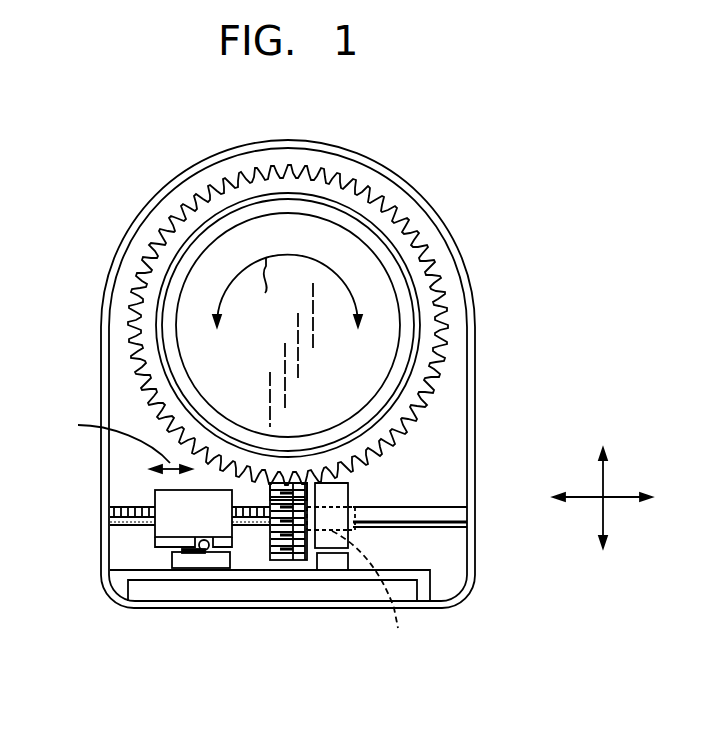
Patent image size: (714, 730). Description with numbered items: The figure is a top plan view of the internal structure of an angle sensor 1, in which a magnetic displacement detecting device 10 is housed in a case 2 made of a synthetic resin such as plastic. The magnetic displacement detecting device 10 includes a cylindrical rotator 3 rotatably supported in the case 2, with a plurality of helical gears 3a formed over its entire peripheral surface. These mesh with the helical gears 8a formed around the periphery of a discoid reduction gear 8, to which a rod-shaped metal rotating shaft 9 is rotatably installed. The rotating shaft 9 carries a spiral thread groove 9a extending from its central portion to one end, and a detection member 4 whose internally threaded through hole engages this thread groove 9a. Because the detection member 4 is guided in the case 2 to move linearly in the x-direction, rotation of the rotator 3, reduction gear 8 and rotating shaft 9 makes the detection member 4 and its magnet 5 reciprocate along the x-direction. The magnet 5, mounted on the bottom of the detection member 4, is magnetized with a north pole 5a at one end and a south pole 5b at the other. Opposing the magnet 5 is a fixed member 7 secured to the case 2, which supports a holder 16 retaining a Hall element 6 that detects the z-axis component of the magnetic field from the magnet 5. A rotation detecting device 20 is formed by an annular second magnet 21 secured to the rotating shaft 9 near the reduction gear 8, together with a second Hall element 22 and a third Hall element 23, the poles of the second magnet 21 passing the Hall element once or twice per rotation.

The angle sensor 1 is at (531, 270).
The case 2 is at (120, 229).
The rotator 3 is at (388, 197).
The helical gears 3a is at (413, 221).
The detection member 4 is at (153, 491).
The magnet 5 is at (161, 555).
The north pole 5a is at (158, 540).
The south pole 5b is at (228, 540).
The Hall element 6 is at (208, 553).
The fixed member 7 is at (138, 580).
The reduction gear 8 is at (290, 575).
The helical gears 8a is at (270, 483).
The rotating shaft 9 is at (440, 540).
The thread groove 9a is at (112, 512).
The magnetic displacement detecting device 10 is at (370, 590).
The holder 16 is at (222, 563).
The rotation detecting device 20 is at (366, 498).
The second magnet 21 is at (366, 498).
The second Hall element 22 is at (337, 562).
The third Hall element 23 is at (375, 598).